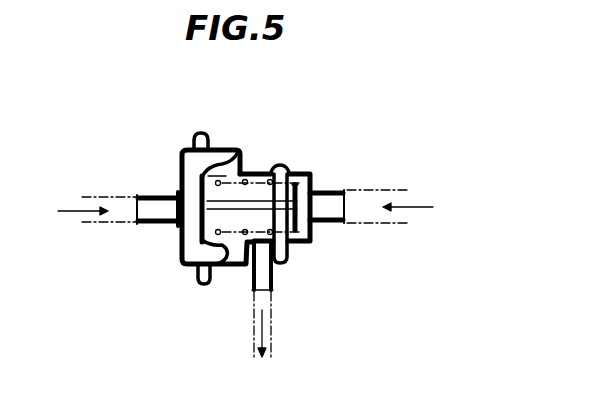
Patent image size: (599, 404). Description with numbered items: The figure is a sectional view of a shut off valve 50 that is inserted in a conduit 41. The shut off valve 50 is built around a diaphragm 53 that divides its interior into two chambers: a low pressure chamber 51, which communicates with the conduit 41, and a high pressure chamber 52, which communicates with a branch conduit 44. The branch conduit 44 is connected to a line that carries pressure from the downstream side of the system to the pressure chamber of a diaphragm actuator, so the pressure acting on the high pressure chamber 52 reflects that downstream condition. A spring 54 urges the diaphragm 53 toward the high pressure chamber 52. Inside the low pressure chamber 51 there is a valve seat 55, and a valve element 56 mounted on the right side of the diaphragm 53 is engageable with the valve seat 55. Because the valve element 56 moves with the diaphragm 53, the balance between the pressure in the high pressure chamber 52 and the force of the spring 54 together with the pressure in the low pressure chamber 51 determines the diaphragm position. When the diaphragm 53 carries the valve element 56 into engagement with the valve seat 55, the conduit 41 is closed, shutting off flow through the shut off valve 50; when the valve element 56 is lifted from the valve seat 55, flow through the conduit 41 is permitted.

The conduit 41 is at (399, 224).
The branch conduit 44 is at (113, 197).
The shut off valve 50 is at (218, 134).
The low pressure chamber 51 is at (309, 241).
The high pressure chamber 52 is at (187, 149).
The diaphragm 53 is at (232, 150).
The spring 54 is at (263, 173).
The valve seat 55 is at (296, 182).
The valve element 56 is at (313, 188).